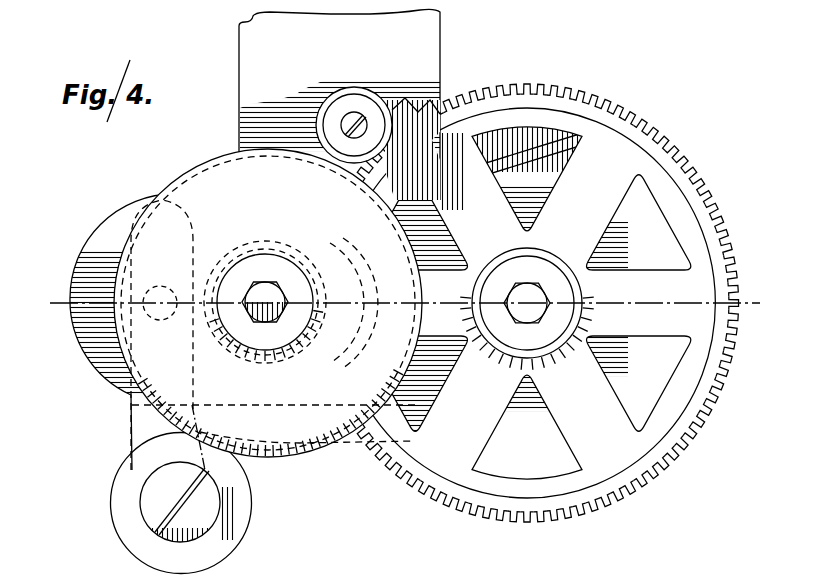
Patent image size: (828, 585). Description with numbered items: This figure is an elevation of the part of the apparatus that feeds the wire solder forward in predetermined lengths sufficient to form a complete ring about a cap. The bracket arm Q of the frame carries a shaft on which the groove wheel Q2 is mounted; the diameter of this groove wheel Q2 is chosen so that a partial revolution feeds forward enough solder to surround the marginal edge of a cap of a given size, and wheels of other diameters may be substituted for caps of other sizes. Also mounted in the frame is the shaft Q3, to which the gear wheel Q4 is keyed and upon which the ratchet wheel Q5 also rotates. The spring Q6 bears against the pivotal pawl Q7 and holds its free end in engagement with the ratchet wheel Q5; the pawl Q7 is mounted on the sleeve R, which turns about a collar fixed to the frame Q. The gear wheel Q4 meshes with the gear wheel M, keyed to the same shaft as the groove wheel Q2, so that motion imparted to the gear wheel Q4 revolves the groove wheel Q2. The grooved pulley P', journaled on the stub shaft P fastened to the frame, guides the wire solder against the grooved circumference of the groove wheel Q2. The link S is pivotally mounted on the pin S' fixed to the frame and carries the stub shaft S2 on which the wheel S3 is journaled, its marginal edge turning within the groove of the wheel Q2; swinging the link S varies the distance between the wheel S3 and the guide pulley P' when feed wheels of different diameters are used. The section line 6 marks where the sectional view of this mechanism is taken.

The bracket arm of the frame Q is at (256, 76).
The stub shaft P is at (354, 104).
The grooved pulley P' is at (406, 122).
The groove wheel Q2 is at (305, 418).
The shaft Q3 is at (528, 296).
The gear wheel Q4 is at (527, 303).
The ratchet wheel Q5 is at (620, 370).
The spring Q6 is at (555, 150).
The pivotal pawl Q7 is at (508, 140).
The sleeve R is at (625, 252).
The gear wheel M is at (241, 250).
The link S is at (122, 332).
The pin S' is at (160, 284).
The stub shaft S2 is at (152, 522).
The wheel S3 is at (227, 548).
The section line 6 is at (403, 303).